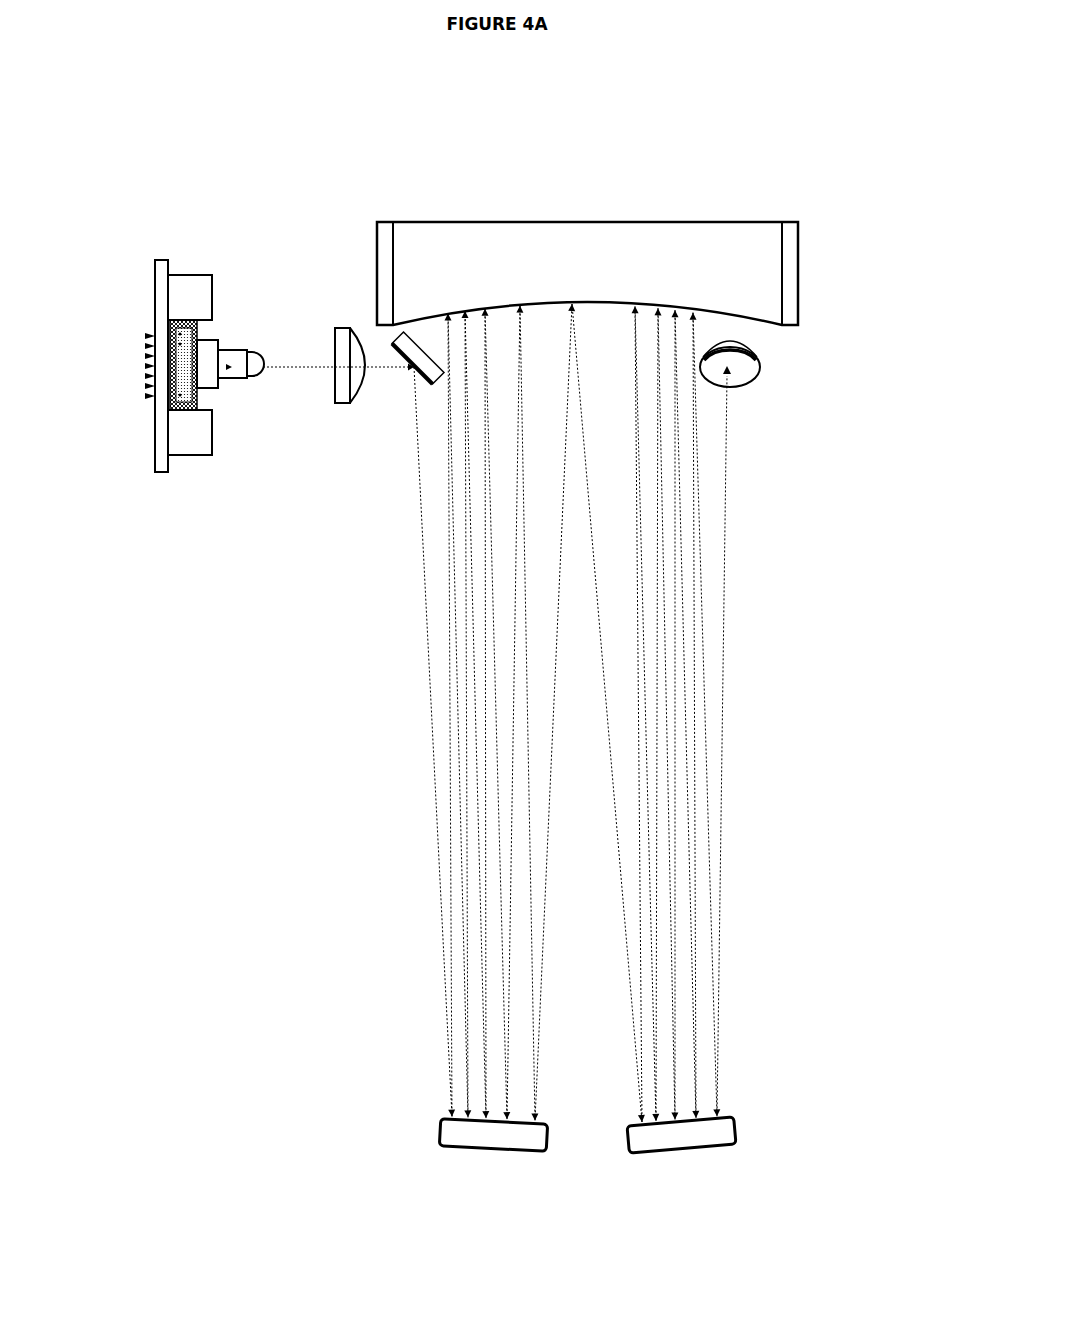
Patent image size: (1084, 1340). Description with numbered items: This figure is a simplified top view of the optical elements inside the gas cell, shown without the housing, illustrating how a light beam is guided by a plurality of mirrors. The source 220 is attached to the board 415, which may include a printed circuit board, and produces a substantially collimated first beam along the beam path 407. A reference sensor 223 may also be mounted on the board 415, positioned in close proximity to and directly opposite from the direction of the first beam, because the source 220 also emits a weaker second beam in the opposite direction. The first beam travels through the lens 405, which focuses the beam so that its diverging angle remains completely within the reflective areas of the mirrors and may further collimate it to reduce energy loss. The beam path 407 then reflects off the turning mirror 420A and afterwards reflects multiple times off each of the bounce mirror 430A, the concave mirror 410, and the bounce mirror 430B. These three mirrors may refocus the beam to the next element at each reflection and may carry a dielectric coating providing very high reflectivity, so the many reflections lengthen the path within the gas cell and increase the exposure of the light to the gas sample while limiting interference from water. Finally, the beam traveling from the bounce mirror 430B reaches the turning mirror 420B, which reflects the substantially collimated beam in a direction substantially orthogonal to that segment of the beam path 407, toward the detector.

The reference sensor 223 is at (201, 330).
The board 415 is at (163, 472).
The source 220 is at (250, 383).
The lens 405 is at (360, 390).
The turning mirror 420A is at (392, 338).
The concave mirror 410 is at (415, 222).
The turning mirror 420B is at (758, 370).
The bounce mirror 430A is at (475, 1150).
The bounce mirror 430B is at (698, 1150).
The beam path 407 is at (428, 577).